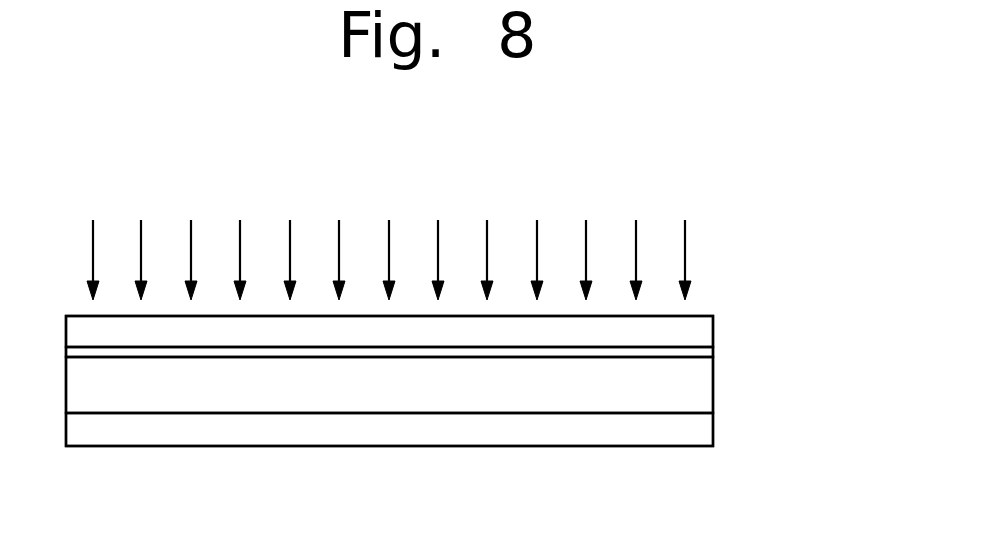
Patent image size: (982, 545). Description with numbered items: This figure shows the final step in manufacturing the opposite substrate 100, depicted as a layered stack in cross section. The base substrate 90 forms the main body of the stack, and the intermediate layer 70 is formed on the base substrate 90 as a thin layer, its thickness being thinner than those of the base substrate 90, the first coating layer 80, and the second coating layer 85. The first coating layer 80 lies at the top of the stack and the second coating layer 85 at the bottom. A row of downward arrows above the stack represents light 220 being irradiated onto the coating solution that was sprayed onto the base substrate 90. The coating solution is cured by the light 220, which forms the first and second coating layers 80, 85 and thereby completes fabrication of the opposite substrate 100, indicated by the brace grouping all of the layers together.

The light 220 is at (686, 252).
The first coating layer 80 is at (702, 335).
The intermediate layer 70 is at (702, 350).
The base substrate 90 is at (702, 388).
The second coating layer 85 is at (702, 432).
The opposite substrate 100 is at (805, 300).